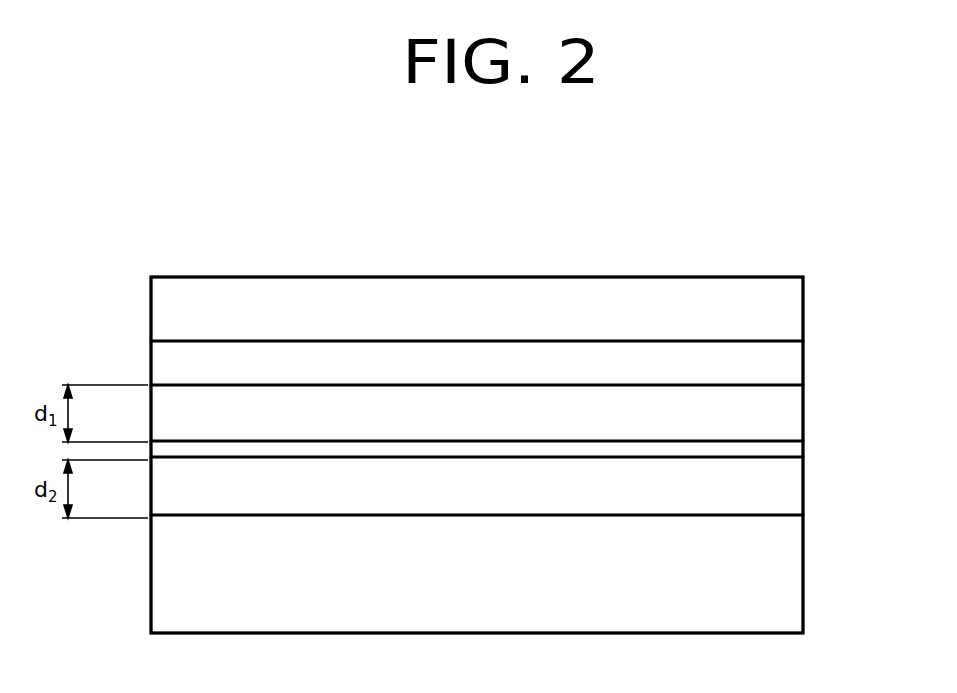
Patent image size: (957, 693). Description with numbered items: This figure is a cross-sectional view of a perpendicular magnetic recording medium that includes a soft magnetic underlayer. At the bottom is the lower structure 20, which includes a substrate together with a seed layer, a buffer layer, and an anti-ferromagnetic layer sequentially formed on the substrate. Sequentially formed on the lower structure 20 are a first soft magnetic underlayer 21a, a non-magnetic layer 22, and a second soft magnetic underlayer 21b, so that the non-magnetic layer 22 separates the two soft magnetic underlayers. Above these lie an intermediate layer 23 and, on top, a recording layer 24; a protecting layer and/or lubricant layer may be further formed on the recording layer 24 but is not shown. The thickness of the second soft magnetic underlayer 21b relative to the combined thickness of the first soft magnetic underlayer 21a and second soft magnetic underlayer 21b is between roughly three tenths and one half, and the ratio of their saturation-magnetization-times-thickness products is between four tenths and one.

The lower structure 20 is at (797, 571).
The first soft magnetic underlayer 21a is at (797, 488).
The non-magnetic layer 22 is at (797, 451).
The second soft magnetic underlayer 21b is at (797, 412).
The intermediate layer 23 is at (797, 351).
The recording layer 24 is at (797, 303).